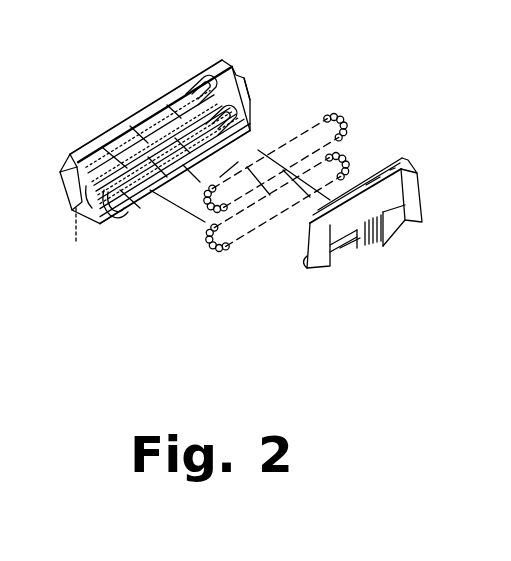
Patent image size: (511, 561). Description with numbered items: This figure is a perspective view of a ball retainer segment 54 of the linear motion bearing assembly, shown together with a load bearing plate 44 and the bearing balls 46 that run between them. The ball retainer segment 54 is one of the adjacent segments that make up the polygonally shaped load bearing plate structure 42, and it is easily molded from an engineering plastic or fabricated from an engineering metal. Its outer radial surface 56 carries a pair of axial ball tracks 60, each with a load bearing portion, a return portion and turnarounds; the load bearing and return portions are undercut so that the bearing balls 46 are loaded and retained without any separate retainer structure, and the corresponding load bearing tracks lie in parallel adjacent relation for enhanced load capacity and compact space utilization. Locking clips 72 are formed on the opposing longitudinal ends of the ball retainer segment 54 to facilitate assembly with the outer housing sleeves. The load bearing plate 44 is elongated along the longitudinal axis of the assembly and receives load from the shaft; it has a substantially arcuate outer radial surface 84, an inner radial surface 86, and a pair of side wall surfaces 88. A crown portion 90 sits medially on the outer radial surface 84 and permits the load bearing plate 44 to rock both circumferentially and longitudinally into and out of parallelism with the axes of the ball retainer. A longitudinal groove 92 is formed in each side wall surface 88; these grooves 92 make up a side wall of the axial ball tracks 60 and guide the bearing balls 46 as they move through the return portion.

The load bearing plate structure 42 is at (124, 226).
The load bearing plate 44 is at (420, 223).
The bearing balls 46 is at (345, 124).
The ball retainer segment 54 is at (128, 213).
The outer radial surface 56 is at (105, 222).
The axial ball tracks 60 is at (172, 200).
The locking clips 72 is at (245, 90).
The outer radial surface 84 is at (352, 250).
The inner radial surface 86 is at (307, 256).
The side wall surfaces 88 is at (390, 170).
The crown portion 90 is at (388, 230).
The longitudinal groove 92 is at (373, 184).